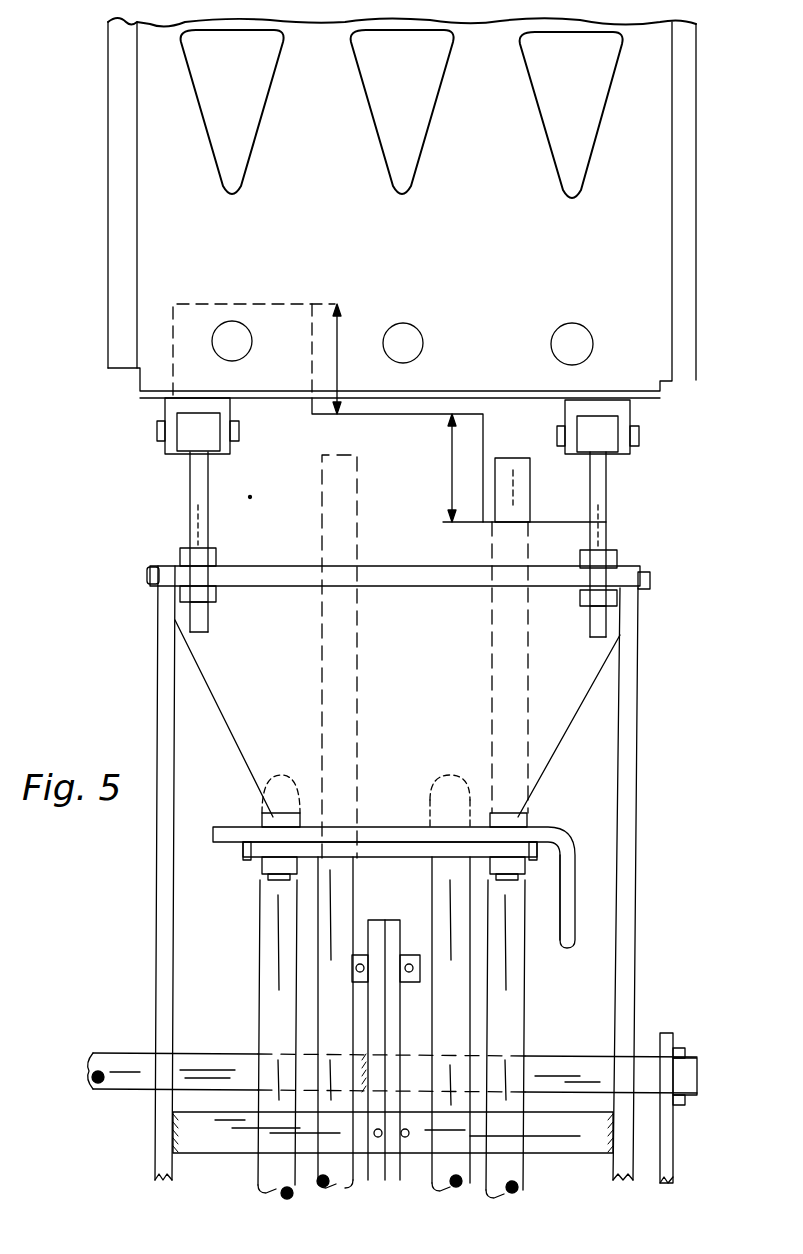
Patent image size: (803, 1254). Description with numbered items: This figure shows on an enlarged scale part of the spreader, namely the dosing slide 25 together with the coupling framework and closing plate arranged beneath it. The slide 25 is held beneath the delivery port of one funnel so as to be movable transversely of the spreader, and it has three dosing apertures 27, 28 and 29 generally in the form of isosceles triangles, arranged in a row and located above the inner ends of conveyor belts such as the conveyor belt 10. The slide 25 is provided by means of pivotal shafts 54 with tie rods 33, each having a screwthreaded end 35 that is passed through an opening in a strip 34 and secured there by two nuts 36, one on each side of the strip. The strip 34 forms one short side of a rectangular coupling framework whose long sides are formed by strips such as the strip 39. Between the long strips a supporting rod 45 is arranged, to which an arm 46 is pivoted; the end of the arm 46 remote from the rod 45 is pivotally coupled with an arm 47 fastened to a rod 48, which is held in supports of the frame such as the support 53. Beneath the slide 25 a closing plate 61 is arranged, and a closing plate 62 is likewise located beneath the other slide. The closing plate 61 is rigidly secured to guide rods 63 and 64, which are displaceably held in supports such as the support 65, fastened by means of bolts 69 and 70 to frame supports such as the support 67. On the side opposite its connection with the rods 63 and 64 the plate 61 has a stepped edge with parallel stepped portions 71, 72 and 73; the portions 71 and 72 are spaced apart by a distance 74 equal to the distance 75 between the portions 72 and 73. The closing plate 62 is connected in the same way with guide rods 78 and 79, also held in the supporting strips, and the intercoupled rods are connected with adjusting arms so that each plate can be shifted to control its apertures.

The conveyor belt 10 is at (165, 660).
The dosing slide 25 is at (168, 226).
The dosing aperture 27 is at (562, 126).
The dosing aperture 28 is at (378, 128).
The dosing aperture 29 is at (212, 128).
The tie rod 33 is at (193, 480).
The strip 34 is at (385, 580).
The screwthreaded end 35 is at (210, 628).
The nut 36 is at (216, 556).
The strip 39 is at (628, 716).
The supporting rod 45 is at (243, 1150).
The arm 46 is at (400, 920).
The arm 47 is at (375, 1000).
The rod 48 is at (108, 1053).
The support 53 is at (668, 1040).
The pivotal shaft 54 is at (157, 428).
The closing plate 61 is at (250, 497).
The closing plate 62 is at (394, 801).
The guide rod 63 is at (272, 916).
The guide rod 64 is at (455, 1006).
The support 65 is at (388, 842).
The support 67 is at (556, 832).
The bolt 69 is at (262, 866).
The bolt 70 is at (512, 882).
The stepped portion 71 is at (262, 302).
The stepped portion 72 is at (405, 414).
The stepped portion 73 is at (503, 535).
The distance 74 is at (338, 350).
The distance 75 is at (448, 468).
The guide rod 78 is at (345, 686).
The guide rod 79 is at (497, 683).